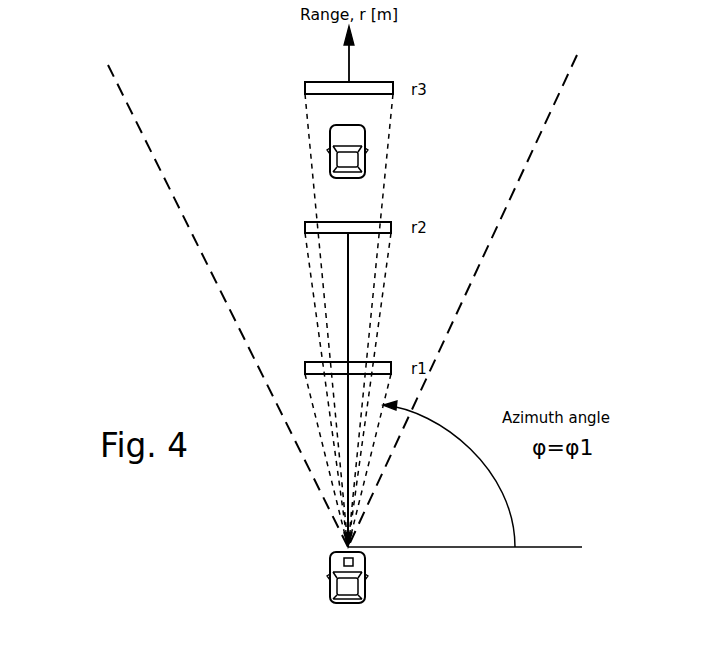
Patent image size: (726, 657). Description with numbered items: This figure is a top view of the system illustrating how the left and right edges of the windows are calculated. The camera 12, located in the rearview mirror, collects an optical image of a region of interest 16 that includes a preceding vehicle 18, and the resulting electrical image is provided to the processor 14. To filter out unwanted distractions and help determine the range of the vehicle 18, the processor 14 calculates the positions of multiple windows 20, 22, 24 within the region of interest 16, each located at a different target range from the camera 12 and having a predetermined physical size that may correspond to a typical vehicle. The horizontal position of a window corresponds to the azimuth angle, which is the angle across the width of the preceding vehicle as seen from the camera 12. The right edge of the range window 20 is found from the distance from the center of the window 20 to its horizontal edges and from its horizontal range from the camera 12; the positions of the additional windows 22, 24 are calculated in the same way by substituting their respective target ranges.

The camera 12 is at (332, 561).
The processor 14 is at (365, 583).
The region of interest 16 is at (483, 259).
The vehicle 18 is at (330, 156).
The window 20 is at (387, 362).
The window 22 is at (391, 222).
The window 24 is at (387, 82).